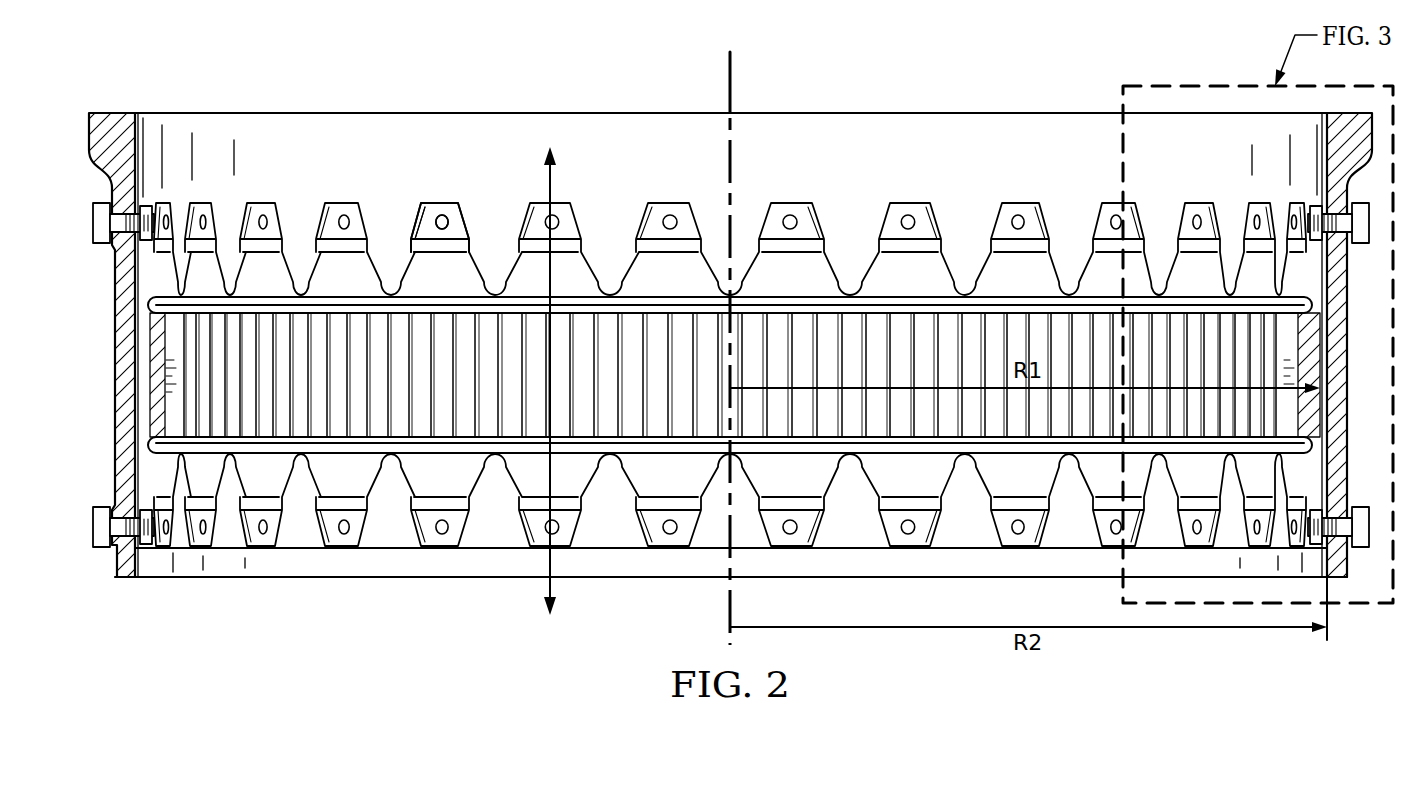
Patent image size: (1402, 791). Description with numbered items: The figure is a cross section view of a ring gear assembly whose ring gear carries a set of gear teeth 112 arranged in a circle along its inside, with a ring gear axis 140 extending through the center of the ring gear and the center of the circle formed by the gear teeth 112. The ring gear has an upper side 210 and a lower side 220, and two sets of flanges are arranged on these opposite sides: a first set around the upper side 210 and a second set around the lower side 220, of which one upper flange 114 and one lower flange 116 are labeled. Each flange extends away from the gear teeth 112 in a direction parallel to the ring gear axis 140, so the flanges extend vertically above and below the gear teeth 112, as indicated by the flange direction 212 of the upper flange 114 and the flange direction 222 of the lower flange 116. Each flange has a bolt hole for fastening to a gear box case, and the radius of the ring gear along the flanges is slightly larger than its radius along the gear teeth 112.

The gear teeth 112 is at (287, 330).
The upper flange 114 is at (730, 212).
The lower flange 116 is at (572, 486).
The ring gear axis 140 is at (733, 84).
The upper side 210 is at (426, 190).
The flange direction 212 is at (548, 186).
The lower side 220 is at (337, 565).
The flange direction 222 is at (547, 565).